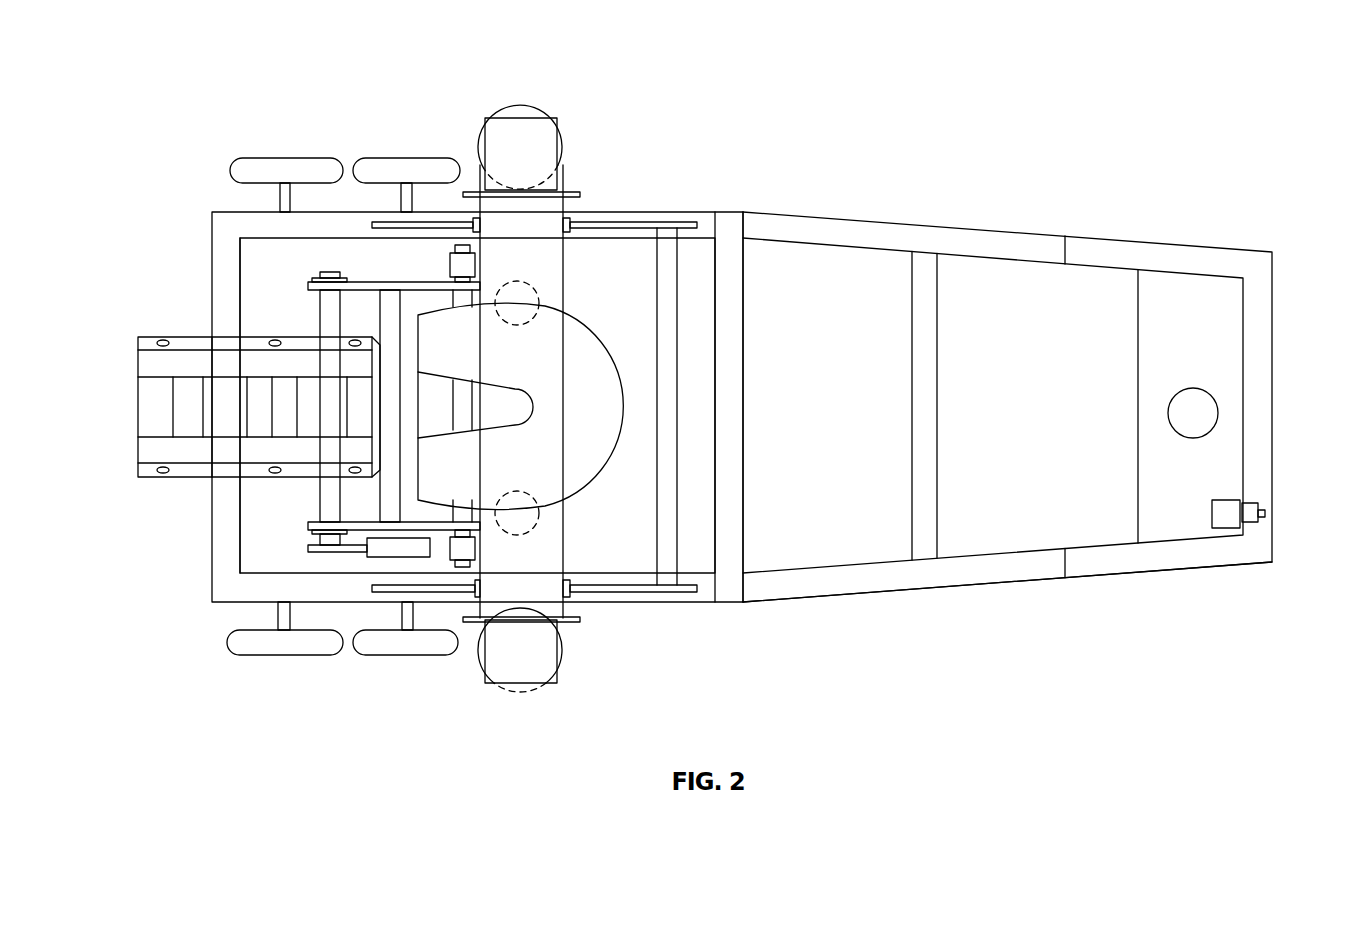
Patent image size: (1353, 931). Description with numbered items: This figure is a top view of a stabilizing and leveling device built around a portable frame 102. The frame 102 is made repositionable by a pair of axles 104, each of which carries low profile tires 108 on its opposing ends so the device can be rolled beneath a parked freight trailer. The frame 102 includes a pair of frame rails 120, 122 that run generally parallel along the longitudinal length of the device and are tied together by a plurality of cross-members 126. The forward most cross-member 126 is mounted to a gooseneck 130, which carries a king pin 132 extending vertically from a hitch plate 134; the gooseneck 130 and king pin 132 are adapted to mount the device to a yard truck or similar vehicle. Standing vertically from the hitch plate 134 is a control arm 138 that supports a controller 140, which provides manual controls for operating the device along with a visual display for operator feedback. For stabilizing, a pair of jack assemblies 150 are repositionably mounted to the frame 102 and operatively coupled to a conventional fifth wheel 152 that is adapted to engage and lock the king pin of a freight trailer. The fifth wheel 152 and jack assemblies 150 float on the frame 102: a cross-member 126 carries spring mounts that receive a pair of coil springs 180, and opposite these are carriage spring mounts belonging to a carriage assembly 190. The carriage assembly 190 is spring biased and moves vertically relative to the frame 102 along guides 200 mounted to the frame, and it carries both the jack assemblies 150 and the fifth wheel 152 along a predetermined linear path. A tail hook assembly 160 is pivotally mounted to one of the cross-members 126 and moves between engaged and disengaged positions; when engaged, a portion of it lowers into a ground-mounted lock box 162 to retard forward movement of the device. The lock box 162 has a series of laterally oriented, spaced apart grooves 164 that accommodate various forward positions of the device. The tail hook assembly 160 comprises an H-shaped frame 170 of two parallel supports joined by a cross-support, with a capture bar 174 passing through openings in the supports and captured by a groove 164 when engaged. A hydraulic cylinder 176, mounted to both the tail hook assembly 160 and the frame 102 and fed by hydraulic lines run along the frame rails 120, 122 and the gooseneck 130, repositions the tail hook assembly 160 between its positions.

The portable frame 102 is at (725, 225).
The axle 104 is at (283, 200).
The tire 108 is at (297, 170).
The frame rail 120 is at (423, 598).
The frame rail 122 is at (665, 208).
The cross-member 126 is at (727, 423).
The gooseneck 130 is at (958, 578).
The king pin 132 is at (1193, 413).
The hitch plate 134 is at (1155, 482).
The control arm 138 is at (1225, 518).
The controller 140 is at (1257, 508).
The jack assembly 150 is at (523, 130).
The fifth wheel 152 is at (582, 463).
The tail hook assembly 160 is at (307, 285).
The lock box 162 is at (138, 450).
The groove 164 is at (187, 425).
The H-shaped frame 170 is at (385, 548).
The capture bar 174 is at (333, 320).
The hydraulic cylinder 176 is at (443, 490).
The coil spring 180 is at (540, 300).
The carriage assembly 190 is at (523, 550).
The guide 200 is at (457, 592).